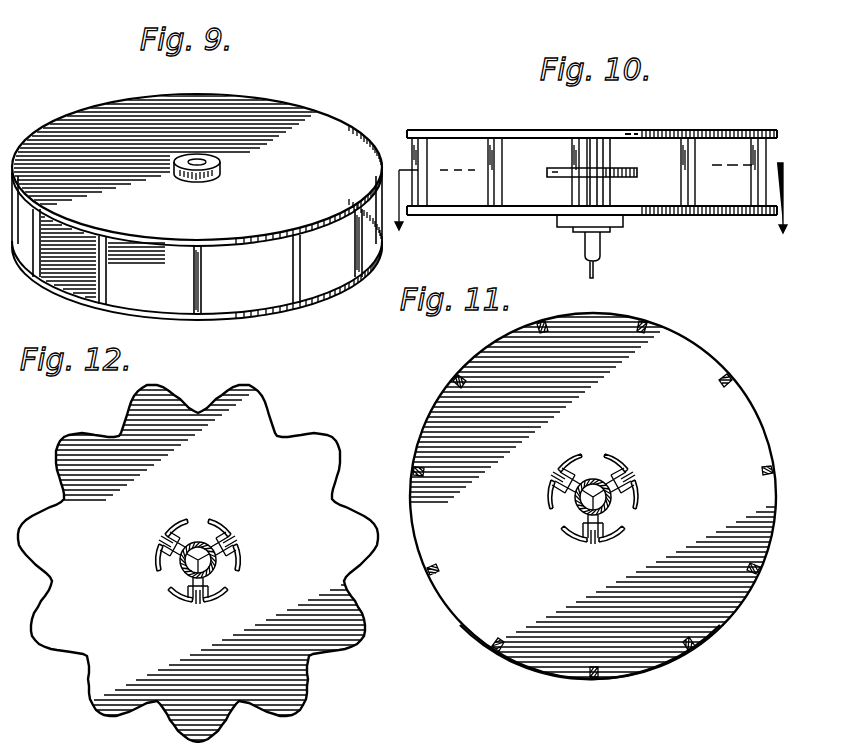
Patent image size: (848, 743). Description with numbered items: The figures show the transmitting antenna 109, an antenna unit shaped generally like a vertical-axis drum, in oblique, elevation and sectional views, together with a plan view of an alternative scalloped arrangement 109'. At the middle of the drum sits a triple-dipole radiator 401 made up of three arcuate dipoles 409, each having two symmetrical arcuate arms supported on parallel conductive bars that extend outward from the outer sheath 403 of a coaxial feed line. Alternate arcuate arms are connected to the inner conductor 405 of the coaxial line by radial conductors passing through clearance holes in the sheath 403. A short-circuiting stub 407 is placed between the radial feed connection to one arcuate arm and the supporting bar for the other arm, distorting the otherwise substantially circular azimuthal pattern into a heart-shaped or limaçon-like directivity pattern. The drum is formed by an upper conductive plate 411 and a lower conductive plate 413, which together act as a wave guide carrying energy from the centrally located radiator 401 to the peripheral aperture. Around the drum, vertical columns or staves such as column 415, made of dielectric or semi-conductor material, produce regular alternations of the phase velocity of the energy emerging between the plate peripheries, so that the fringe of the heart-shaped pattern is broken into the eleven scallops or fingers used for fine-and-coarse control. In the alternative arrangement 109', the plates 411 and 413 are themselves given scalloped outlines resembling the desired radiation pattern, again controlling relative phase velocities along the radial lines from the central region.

In FIG. 9, the transmitting antenna 109 is at (197, 166).
In FIG. 10, the transmitting antenna 109 is at (592, 187).
In FIG. 11, the transmitting antenna 109 is at (586, 496).
In FIG. 12, the lobed rotor disc 109' is at (210, 563).
In FIG. 10, the triple-dipole radiator 401 is at (618, 170).
In FIG. 11, the triple-dipole radiator 401 is at (638, 470).
In FIG. 12, the triple-dipole radiator 401 is at (232, 527).
In FIG. 11, the outer sheath 403 is at (573, 510).
In FIG. 12, the outer sheath 403 is at (181, 584).
In FIG. 11, the inner conductor 405 is at (593, 497).
In FIG. 12, the inner conductor 405 is at (198, 560).
In FIG. 11, the short-circuiting stub 407 is at (596, 545).
In FIG. 12, the short-circuiting stub 407 is at (200, 606).
In FIG. 11, the arcuate dipole 409 is at (565, 460).
In FIG. 12, the arcuate dipole 409 is at (178, 526).
In FIG. 9, the upper conductive plate 411 is at (233, 241).
In FIG. 10, the upper conductive plate 411 is at (748, 130).
In FIG. 9, the lower conductive plate 413 is at (252, 313).
In FIG. 10, the lower conductive plate 413 is at (740, 216).
In FIG. 11, the lower conductive plate 413 is at (712, 612).
In FIG. 9, the vertical column 415 is at (193, 283).
In FIG. 10, the vertical column 415 is at (688, 185).
In FIG. 11, the vertical column 415 is at (722, 376).